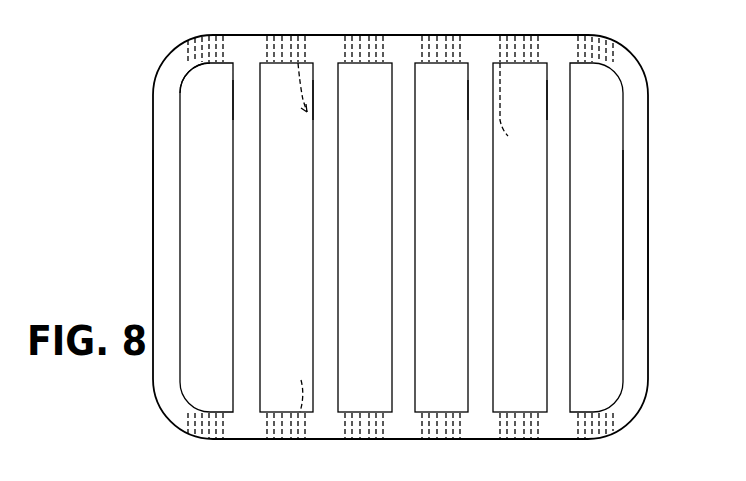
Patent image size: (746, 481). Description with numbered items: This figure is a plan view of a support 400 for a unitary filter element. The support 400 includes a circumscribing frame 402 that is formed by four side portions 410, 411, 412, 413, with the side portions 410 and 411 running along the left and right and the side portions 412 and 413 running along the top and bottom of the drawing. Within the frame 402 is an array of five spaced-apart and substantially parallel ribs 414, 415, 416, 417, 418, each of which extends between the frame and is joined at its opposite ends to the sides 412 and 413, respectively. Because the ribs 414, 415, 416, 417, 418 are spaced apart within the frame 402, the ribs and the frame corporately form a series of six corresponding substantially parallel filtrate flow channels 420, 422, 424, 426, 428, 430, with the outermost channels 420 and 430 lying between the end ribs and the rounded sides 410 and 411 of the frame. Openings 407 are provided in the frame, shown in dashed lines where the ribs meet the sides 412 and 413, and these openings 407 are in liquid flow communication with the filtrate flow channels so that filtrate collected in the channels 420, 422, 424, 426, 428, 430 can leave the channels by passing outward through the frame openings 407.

The support 400 is at (654, 361).
The circumscribing frame 402 is at (635, 292).
The openings 407 is at (404, 237).
The side portion 410 is at (166, 228).
The side portion 411 is at (637, 226).
The side portion 412 is at (404, 50).
The side portion 413 is at (456, 435).
The rib 414 is at (246, 250).
The rib 415 is at (324, 270).
The rib 416 is at (401, 291).
The rib 417 is at (478, 312).
The rib 418 is at (560, 333).
The filtrate flow channel 420 is at (188, 102).
The filtrate flow channel 422 is at (270, 82).
The filtrate flow channel 424 is at (342, 75).
The filtrate flow channel 426 is at (457, 77).
The filtrate flow channel 428 is at (527, 88).
The filtrate flow channel 430 is at (613, 114).